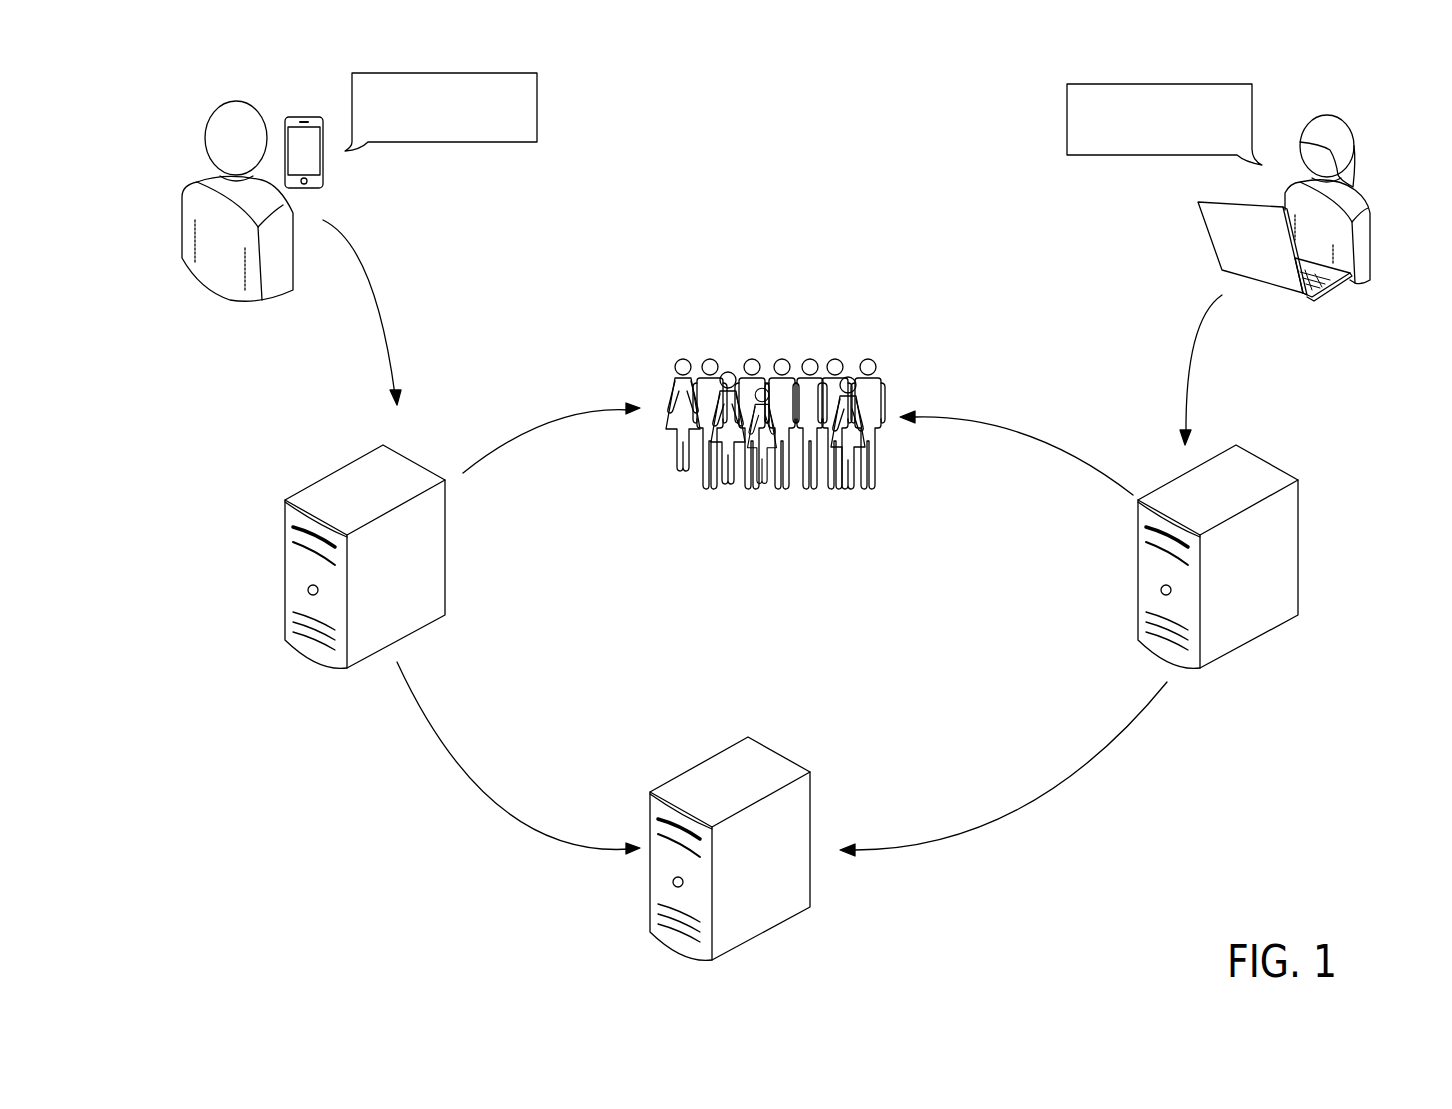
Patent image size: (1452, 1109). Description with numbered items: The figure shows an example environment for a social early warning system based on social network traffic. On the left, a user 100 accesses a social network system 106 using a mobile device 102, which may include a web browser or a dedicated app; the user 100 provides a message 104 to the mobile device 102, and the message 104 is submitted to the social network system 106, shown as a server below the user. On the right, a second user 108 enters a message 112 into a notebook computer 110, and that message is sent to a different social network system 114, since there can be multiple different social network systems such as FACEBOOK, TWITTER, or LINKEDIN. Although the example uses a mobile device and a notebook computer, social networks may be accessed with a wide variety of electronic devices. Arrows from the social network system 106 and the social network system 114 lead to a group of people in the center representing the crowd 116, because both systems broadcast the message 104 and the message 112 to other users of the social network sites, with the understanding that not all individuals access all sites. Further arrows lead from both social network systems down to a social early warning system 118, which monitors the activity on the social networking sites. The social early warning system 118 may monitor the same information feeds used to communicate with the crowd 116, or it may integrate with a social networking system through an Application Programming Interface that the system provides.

The user 100 is at (205, 142).
The mobile device 102 is at (323, 172).
The message 104 is at (537, 112).
The social network system 106 is at (445, 566).
The user 108 is at (1353, 152).
The notebook computer 110 is at (1210, 246).
The message 112 is at (1067, 128).
The social network system 114 is at (1298, 527).
The crowd 116 is at (887, 363).
The social early warning system 118 is at (782, 752).